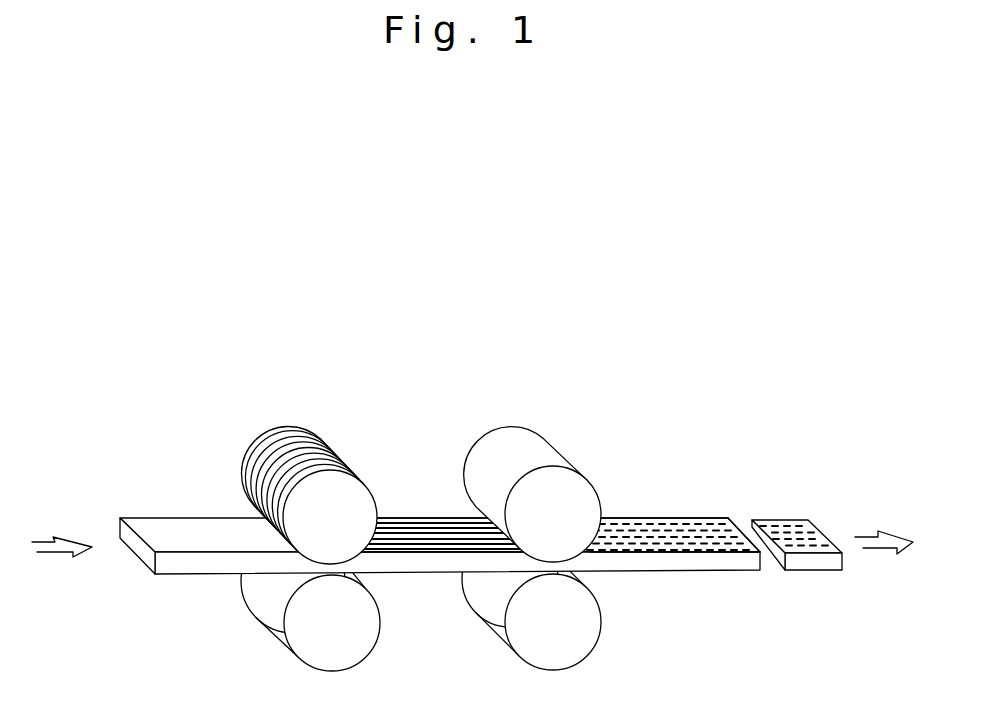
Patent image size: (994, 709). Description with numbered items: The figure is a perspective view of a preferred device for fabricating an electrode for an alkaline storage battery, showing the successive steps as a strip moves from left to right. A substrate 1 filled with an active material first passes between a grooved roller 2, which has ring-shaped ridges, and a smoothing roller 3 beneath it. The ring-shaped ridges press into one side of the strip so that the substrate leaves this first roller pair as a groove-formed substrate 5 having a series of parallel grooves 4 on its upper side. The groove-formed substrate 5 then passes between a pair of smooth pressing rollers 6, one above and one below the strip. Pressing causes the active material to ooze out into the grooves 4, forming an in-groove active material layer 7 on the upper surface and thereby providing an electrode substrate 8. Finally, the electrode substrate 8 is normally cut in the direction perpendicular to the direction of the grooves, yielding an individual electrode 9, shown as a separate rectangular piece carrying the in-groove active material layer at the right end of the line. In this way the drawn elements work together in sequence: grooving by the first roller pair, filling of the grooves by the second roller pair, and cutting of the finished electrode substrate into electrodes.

The substrate 1 is at (190, 535).
The grooved roller 2 is at (320, 432).
The smoothing roller 3 is at (357, 640).
The grooves 4 is at (463, 535).
The groove-formed substrate 5 is at (403, 515).
The smooth pressing rollers 6 is at (563, 527).
The in-groove active material layer 7 is at (647, 540).
The electrode substrate 8 is at (695, 513).
The electrode 9 is at (793, 512).